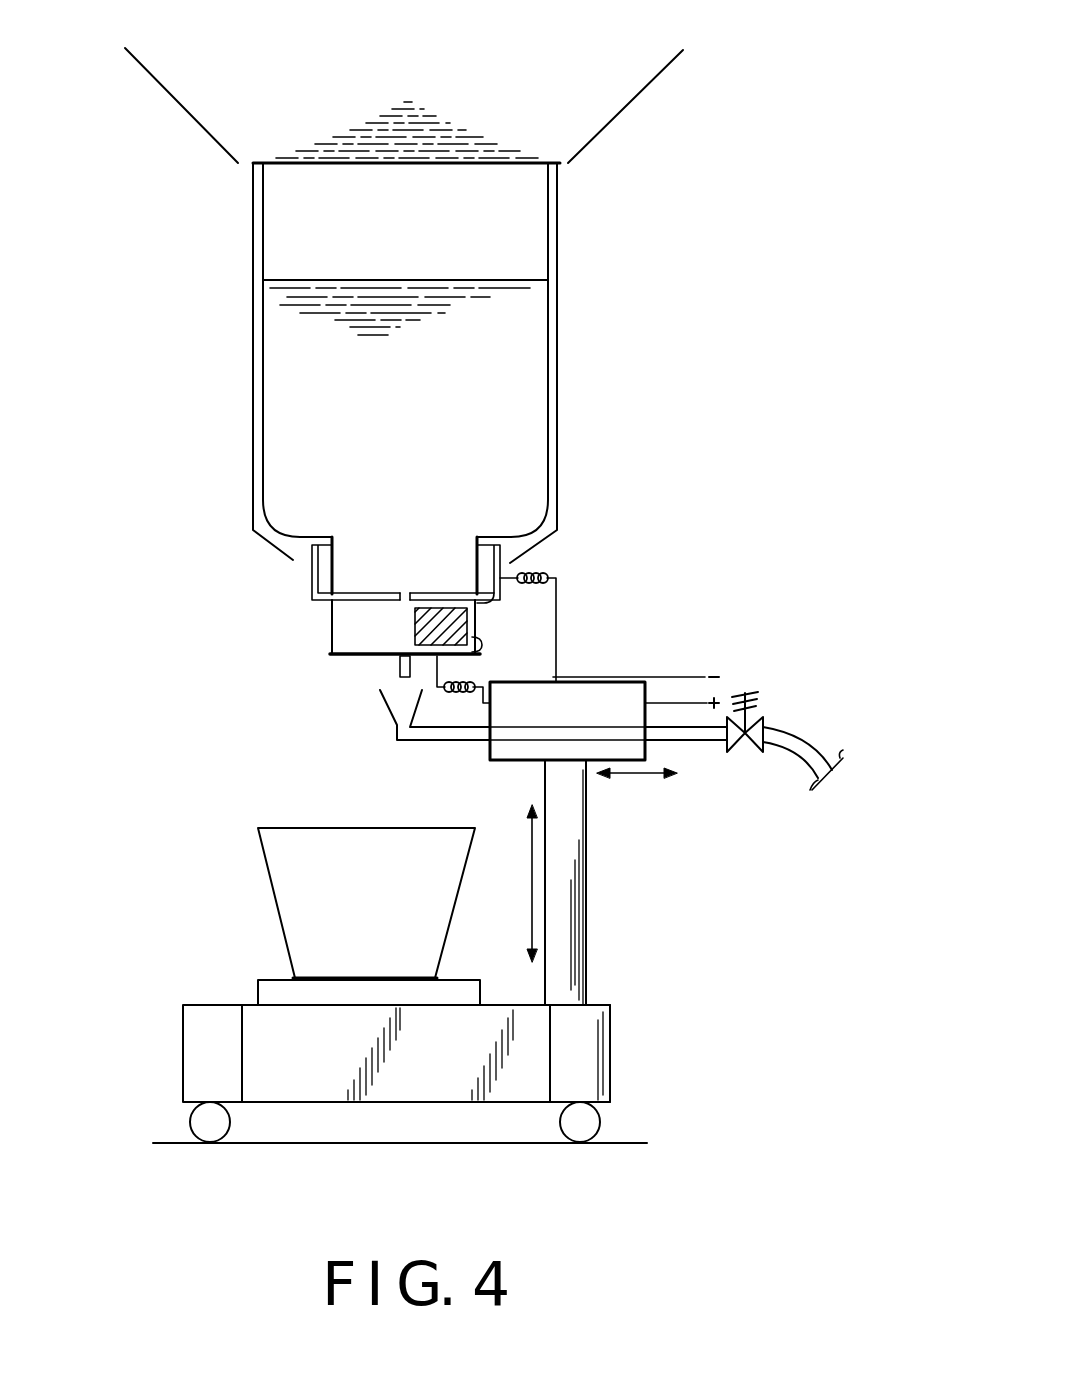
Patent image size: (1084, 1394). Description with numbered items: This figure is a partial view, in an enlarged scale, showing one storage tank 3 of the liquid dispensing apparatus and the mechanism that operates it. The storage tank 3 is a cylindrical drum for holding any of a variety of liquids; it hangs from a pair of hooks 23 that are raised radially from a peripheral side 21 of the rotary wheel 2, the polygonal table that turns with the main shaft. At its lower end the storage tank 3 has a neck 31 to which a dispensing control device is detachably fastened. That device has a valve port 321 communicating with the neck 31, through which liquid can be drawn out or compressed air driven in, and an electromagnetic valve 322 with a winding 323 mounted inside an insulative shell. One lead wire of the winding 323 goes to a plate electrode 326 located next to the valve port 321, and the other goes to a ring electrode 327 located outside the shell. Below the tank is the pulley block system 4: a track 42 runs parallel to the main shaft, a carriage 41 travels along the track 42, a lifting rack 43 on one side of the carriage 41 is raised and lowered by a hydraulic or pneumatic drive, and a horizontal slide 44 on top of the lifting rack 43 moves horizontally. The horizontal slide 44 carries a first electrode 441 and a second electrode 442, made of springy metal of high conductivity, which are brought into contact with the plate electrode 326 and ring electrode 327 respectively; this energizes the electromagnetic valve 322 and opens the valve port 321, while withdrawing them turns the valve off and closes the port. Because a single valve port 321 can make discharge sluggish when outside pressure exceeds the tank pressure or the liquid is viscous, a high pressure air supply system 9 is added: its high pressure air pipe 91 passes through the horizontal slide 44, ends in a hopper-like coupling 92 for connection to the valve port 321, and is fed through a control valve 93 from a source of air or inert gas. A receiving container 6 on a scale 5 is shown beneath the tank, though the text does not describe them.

The rotary wheel 2 is at (607, 95).
The peripheral side 21 is at (153, 68).
The hook 23 is at (557, 338).
The storage tank 3 is at (515, 393).
The ring electrode 327 is at (503, 565).
The neck 31 is at (397, 567).
The electromagnetic valve 322 is at (355, 628).
The winding 323 is at (420, 617).
The plate electrode 326 is at (350, 658).
The valve port 321 is at (400, 672).
The first electrode 441 is at (472, 687).
The second electrode 442 is at (555, 572).
The horizontal slide 44 is at (595, 697).
The hopper-like coupling 92 is at (398, 700).
The high pressure air pipe 91 is at (533, 735).
The high pressure air supply system 9 is at (697, 738).
The control valve 93 is at (765, 723).
The lifting rack 43 is at (573, 903).
The container 6 is at (300, 850).
The weighing scale 5 is at (270, 985).
The carriage 41 is at (585, 1057).
The pulley block system 4 is at (608, 993).
The track 42 is at (578, 1145).